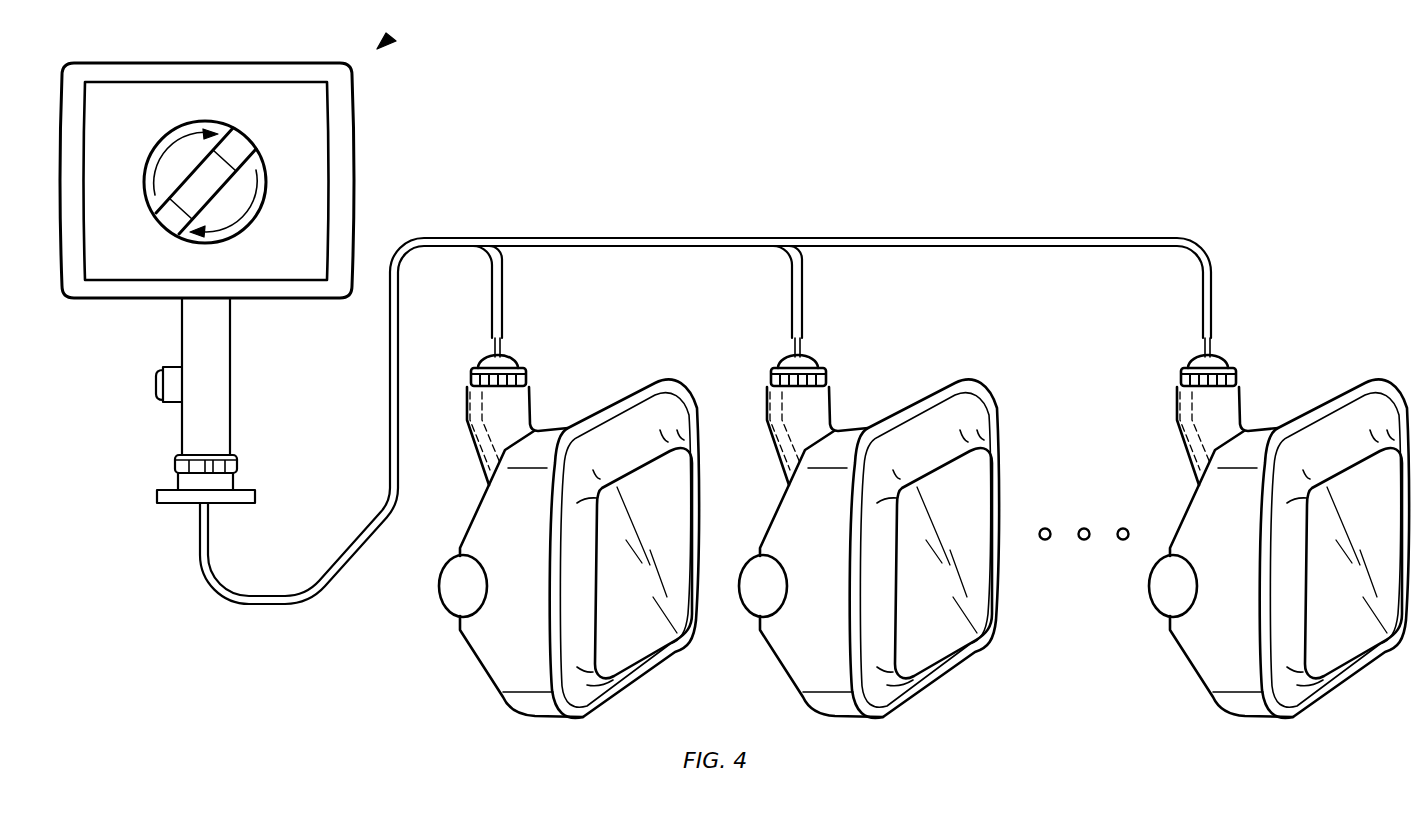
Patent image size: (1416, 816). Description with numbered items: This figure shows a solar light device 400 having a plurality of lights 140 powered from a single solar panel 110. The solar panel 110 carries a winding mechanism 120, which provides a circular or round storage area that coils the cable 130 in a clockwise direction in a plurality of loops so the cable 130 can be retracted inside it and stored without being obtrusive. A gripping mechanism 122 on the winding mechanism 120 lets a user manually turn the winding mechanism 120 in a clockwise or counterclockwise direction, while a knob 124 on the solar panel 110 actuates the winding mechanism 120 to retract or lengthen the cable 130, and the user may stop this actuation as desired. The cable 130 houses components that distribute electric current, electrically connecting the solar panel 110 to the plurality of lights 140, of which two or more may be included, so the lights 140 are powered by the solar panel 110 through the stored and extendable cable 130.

The solar light device 400 is at (392, 35).
The solar panel 110 is at (352, 105).
The winding mechanism 120 is at (188, 121).
The gripping mechanism 122 is at (213, 179).
The knob 124 is at (156, 378).
The cable 130 is at (697, 238).
The plurality of lights 140 is at (646, 383).